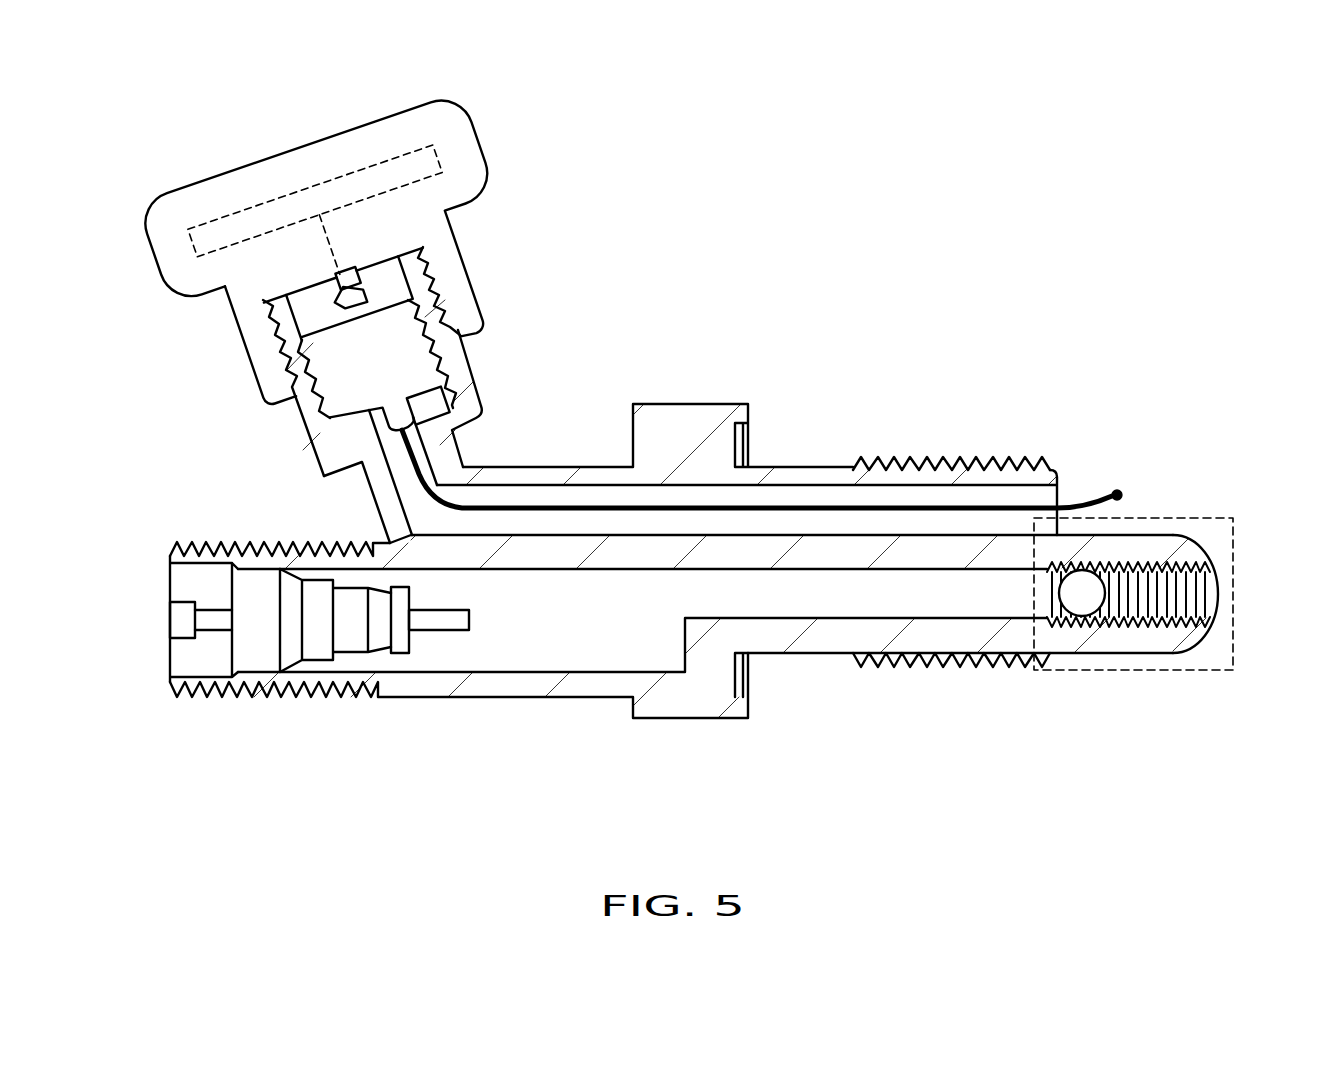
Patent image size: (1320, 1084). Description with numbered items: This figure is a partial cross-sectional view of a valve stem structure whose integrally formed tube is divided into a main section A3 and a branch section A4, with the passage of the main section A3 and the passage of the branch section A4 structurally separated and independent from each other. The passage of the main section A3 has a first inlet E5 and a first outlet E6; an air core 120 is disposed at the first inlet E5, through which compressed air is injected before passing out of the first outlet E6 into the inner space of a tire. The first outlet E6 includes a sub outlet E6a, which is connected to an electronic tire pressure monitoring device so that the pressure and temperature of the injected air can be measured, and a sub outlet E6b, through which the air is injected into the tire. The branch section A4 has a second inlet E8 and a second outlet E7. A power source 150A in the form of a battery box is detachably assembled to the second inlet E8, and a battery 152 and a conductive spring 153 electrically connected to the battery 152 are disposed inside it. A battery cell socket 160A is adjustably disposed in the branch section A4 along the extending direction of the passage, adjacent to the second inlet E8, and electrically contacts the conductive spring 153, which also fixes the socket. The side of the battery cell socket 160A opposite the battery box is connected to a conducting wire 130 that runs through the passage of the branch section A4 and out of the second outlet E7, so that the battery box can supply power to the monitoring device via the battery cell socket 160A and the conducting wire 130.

The power source 150A is at (337, 138).
The battery 152 is at (220, 218).
The second inlet E8 is at (400, 279).
The conductive spring 153 is at (336, 306).
The branch section A4 is at (472, 363).
The battery cell socket 160A is at (346, 392).
The conducting wire 130 is at (536, 506).
The second outlet E7 is at (1074, 494).
The first outlet E6 is at (1202, 516).
The sub outlet E6a is at (1226, 592).
The sub outlet E6b is at (1082, 600).
The first inlet E5 is at (158, 584).
The air core 120 is at (347, 655).
The main section A3 is at (532, 701).